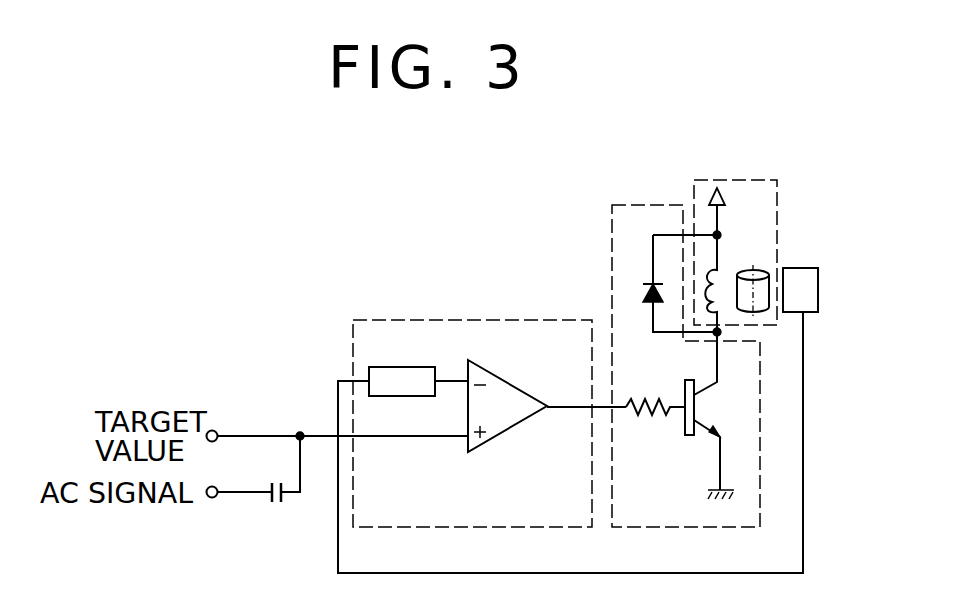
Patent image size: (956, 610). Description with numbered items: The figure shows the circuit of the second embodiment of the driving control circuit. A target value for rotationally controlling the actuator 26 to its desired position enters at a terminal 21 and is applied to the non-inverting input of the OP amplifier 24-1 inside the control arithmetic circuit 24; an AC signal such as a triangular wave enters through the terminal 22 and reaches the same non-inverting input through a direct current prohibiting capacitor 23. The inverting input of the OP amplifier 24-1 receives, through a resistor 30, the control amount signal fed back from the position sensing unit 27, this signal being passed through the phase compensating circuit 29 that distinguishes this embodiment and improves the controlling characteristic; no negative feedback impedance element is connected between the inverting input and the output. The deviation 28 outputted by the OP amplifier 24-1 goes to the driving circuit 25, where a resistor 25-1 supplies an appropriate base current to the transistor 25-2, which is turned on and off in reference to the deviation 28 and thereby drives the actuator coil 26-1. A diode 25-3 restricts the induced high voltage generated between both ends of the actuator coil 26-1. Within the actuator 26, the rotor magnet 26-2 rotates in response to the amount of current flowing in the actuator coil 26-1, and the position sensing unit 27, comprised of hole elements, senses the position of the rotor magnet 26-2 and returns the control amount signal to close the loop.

The target value input terminal 21 is at (214, 431).
The terminal 22 is at (212, 498).
The capacitor C1 23 is at (277, 505).
The control arithmetic circuit 24 is at (423, 320).
The OP amplifier 24-1 is at (540, 362).
The driving circuit 25 is at (611, 240).
The resistor 25-1 is at (648, 413).
The transistor 25-2 is at (716, 403).
The diode 25-3 is at (643, 298).
The actuator 26 is at (694, 203).
The actuator coil 26-1 is at (723, 268).
The rotor magnet 26-2 is at (760, 266).
The position sensing unit 27 is at (806, 268).
The deviation 28 is at (604, 409).
The phase compensating circuit 29 is at (338, 405).
The feedback resistor 30 is at (398, 367).